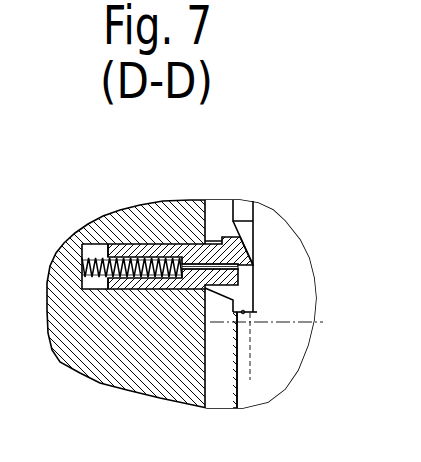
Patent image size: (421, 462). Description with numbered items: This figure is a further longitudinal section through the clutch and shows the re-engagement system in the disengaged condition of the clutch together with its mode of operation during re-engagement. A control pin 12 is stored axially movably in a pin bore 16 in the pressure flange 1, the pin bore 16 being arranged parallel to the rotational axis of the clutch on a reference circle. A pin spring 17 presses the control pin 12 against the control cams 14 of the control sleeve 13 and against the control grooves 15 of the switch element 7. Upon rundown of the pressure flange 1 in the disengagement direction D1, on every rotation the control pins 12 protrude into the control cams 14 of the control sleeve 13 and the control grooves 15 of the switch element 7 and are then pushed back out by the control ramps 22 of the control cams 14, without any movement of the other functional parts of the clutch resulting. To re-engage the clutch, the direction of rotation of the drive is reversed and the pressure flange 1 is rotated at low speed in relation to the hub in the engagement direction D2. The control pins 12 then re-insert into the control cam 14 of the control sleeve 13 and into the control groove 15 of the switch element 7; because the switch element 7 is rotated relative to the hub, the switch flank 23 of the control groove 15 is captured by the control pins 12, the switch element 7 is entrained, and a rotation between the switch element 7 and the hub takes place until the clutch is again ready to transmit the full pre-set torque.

The pressure flange 1 is at (63, 299).
The pin bores 16 is at (87, 243).
The pin springs 17 is at (94, 255).
The control pins 12 is at (203, 241).
The control ramps 22 is at (233, 218).
The control sleeve 13 is at (246, 227).
The control grooves 15 is at (256, 248).
The control cams 14 is at (253, 288).
The switch flank 23 is at (277, 323).
The switch element 7 is at (271, 359).
The disengagement direction D1 is at (122, 343).
The engagement direction D2 is at (124, 219).